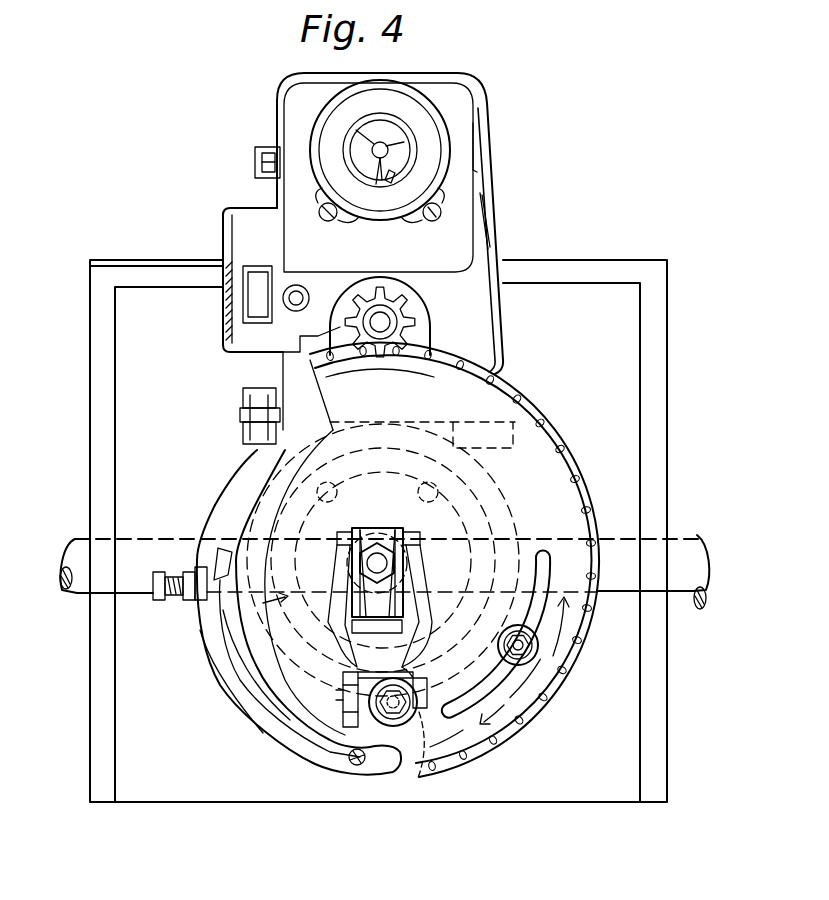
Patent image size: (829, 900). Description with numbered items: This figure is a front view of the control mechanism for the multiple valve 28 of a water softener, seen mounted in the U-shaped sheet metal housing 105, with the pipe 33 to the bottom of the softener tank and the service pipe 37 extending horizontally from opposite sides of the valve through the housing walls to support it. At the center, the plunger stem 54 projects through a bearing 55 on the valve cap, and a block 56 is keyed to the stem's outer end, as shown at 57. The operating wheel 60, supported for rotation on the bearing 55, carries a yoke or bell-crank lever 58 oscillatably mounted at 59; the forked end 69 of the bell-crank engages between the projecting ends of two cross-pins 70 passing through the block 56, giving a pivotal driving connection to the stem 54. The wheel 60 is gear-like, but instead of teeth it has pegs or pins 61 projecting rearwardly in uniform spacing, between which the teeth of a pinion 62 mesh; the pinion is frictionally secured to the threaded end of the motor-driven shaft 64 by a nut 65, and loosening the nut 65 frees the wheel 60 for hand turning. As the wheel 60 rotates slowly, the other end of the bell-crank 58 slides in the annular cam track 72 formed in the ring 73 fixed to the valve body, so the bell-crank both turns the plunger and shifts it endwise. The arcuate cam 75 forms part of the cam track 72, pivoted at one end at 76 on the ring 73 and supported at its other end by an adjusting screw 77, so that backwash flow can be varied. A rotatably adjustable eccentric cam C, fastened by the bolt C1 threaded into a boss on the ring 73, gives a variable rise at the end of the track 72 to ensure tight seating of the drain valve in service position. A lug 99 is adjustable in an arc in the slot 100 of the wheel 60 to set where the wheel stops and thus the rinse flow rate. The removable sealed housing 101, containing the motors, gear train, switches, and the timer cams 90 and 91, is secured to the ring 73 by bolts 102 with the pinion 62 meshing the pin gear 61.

The multiple valve 28 is at (264, 612).
The pipe 33 is at (700, 600).
The pipe 37 is at (75, 592).
The stem 54 is at (377, 575).
The bearing 55 is at (352, 570).
The block 56 is at (363, 535).
The key 57 is at (400, 520).
The bell-crank lever 58 is at (345, 690).
The pivot mounting 59 is at (360, 712).
The operating wheel 60 is at (560, 505).
The pegs or pins 61 is at (530, 397).
The pinion 62 is at (402, 308).
The shaft 64 is at (383, 305).
The nut 65 is at (422, 320).
The forked end 69 is at (418, 575).
The cross-pins 70 is at (338, 540).
The cam track 72 is at (232, 505).
The ring 73 is at (247, 468).
The arcuate cam 75 is at (250, 665).
The pivot 76 is at (388, 760).
The screw 77 is at (165, 602).
The cam 90 is at (382, 178).
The cam 91 is at (389, 176).
The lug 99 is at (540, 643).
The arcuate slot 100 is at (540, 560).
The housing 101 is at (457, 247).
The bolts 102 is at (243, 385).
The sheet metal housing 105 is at (667, 452).
The adjustable cam C is at (412, 750).
The bolt C1 is at (340, 757).